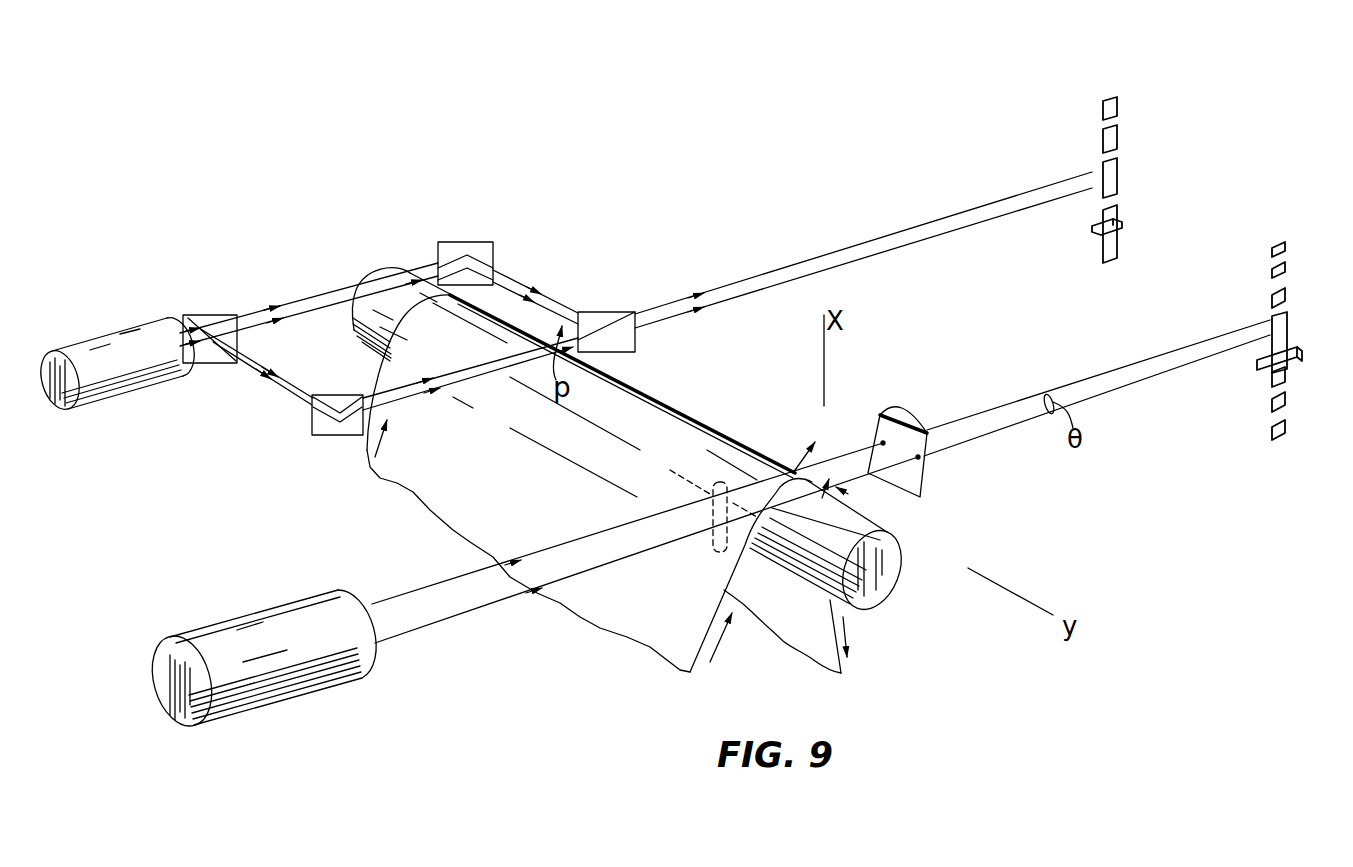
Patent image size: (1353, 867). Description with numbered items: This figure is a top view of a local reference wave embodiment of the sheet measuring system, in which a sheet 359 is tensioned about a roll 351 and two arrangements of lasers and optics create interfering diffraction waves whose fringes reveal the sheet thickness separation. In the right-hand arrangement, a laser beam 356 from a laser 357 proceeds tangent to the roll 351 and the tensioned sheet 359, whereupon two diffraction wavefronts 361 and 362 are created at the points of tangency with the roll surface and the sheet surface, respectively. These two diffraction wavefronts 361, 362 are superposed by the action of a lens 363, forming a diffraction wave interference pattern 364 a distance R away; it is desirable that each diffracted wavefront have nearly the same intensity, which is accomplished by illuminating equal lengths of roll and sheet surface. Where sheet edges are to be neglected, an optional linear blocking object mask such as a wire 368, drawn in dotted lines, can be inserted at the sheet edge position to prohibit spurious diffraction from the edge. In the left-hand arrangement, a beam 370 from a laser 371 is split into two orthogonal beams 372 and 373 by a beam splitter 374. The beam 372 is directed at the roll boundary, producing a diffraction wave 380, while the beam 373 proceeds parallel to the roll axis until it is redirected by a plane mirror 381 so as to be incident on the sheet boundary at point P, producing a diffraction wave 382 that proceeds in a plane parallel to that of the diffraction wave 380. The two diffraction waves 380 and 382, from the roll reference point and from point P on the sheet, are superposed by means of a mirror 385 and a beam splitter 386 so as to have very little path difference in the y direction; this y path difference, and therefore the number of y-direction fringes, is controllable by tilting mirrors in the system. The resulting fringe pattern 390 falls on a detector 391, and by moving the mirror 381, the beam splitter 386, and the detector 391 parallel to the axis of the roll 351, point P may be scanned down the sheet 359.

The drum 351 is at (893, 530).
The laser beam 356 is at (480, 592).
The laser 357 is at (287, 697).
The sheet 359 is at (734, 578).
The diffraction wavefront 361 is at (845, 492).
The diffraction wavefront 362 is at (800, 478).
The lens 363 is at (880, 414).
The diffraction wave interference pattern 364 is at (1278, 245).
The wire 368 is at (640, 452).
The beam 370 is at (114, 350).
The laser 371 is at (118, 388).
The beam 372 is at (298, 298).
The beam 373 is at (283, 361).
The beam splitter 374 is at (204, 315).
The diffraction wave 380 is at (417, 268).
The plane mirror 381 is at (330, 437).
The diffraction wave 382 is at (567, 331).
The mirror 385 is at (476, 242).
The beam splitter 386 is at (606, 312).
The fringe pattern 390 is at (1104, 100).
The detector 391 is at (1122, 225).